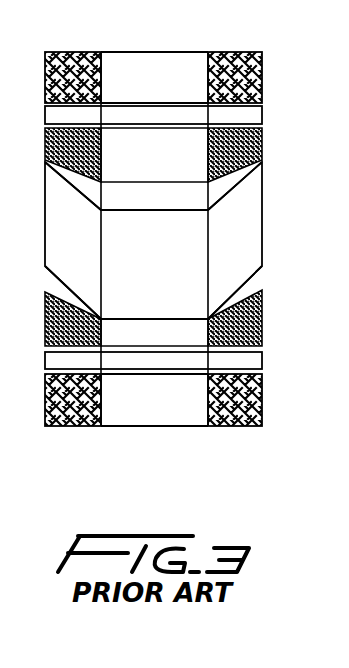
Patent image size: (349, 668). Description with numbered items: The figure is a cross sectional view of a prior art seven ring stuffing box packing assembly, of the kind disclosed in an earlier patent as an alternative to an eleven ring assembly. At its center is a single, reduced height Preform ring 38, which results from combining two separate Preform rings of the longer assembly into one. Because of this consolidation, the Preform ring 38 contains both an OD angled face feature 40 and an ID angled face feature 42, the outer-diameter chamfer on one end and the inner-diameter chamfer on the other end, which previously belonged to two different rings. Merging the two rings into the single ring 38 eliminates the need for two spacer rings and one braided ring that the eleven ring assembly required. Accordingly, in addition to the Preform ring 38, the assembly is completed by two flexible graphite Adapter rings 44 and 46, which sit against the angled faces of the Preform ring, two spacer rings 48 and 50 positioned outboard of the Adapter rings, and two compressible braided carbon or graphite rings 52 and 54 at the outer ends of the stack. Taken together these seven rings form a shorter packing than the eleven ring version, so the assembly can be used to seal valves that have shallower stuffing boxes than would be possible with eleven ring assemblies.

The Preform ring 38 is at (252, 230).
The OD angled face feature 40 is at (228, 183).
The ID angled face feature 42 is at (250, 283).
The flexible graphite Adapter ring 44 is at (262, 143).
The flexible graphite Adapter ring 46 is at (263, 322).
The spacer ring 48 is at (260, 113).
The spacer ring 50 is at (260, 358).
The compressible braided carbon or graphite ring 52 is at (256, 77).
The compressible braided carbon or graphite ring 54 is at (252, 397).